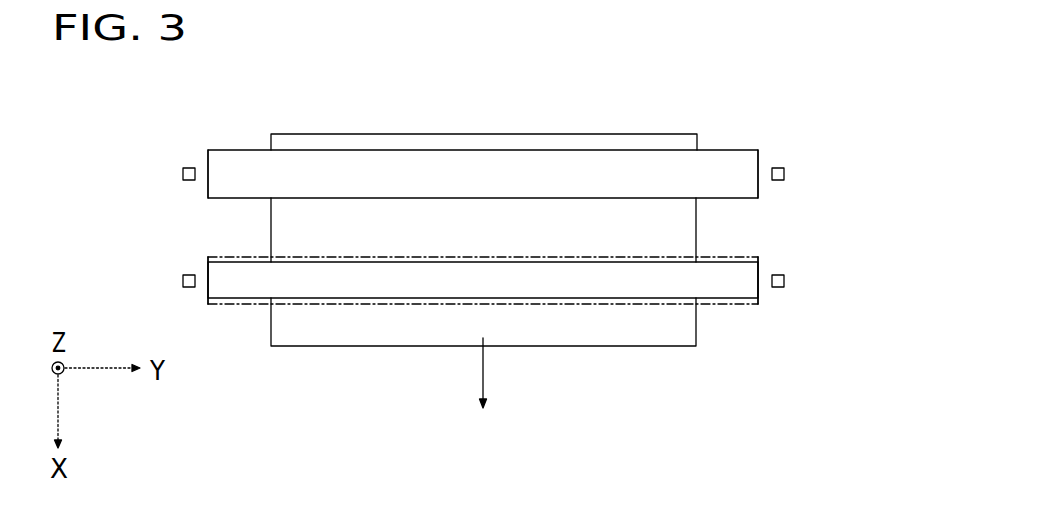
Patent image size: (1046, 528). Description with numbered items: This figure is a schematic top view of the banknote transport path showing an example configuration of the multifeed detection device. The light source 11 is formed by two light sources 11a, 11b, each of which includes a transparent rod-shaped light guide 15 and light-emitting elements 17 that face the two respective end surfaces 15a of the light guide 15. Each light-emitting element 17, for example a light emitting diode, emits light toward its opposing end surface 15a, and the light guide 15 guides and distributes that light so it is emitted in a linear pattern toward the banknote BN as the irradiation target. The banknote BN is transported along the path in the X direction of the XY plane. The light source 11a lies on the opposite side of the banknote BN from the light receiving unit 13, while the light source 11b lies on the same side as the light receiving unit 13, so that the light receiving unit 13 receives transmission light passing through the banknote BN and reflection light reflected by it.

The light source 11 is at (484, 249).
The light source 11a is at (422, 305).
The light source 11b is at (385, 98).
The light receiving unit 13 is at (743, 273).
The light guide 15 is at (628, 165).
The end surface 15a is at (207, 164).
The light-emitting element 17 is at (182, 173).
The banknote BN is at (672, 333).